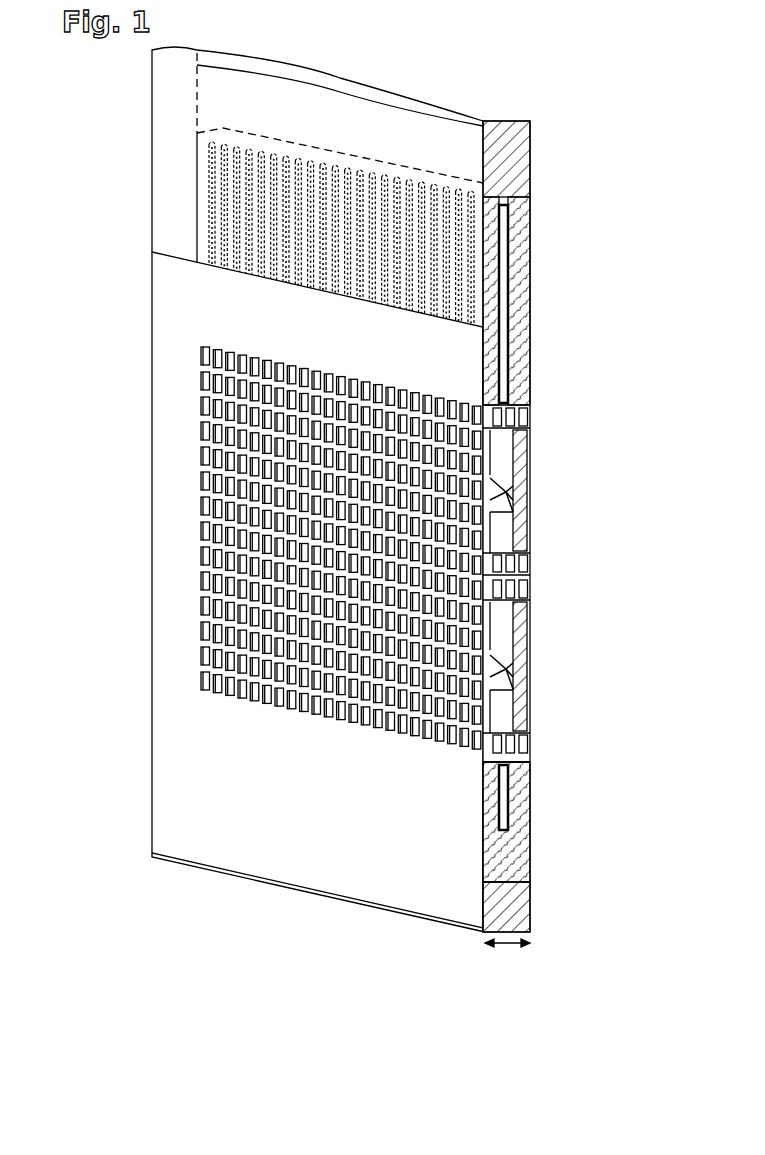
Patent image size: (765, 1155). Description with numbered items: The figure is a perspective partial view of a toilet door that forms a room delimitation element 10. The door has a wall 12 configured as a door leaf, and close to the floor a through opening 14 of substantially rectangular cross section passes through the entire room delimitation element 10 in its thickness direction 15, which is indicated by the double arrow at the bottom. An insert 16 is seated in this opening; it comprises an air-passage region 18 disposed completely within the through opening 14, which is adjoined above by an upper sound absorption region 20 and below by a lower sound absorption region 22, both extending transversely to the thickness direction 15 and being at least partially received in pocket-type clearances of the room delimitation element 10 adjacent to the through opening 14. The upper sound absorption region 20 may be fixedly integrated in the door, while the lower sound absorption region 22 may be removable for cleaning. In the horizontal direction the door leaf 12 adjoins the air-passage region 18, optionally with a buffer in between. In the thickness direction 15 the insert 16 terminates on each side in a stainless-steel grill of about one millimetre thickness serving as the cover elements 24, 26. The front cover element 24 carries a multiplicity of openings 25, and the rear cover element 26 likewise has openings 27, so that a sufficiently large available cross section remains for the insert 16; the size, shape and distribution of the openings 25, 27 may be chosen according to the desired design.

The room delimitation element 10 is at (118, 157).
The wall 12 is at (530, 148).
The through opening 14 is at (510, 207).
The thickness direction 15 is at (505, 945).
The insert 16 is at (650, 193).
The air-passage region 18 is at (600, 402).
The upper sound absorption region 20 is at (600, 193).
The lower sound absorption region 22 is at (600, 762).
The cover element 24 is at (175, 782).
The openings 25 is at (215, 570).
The cover element 26 is at (530, 852).
The openings 27 is at (528, 567).